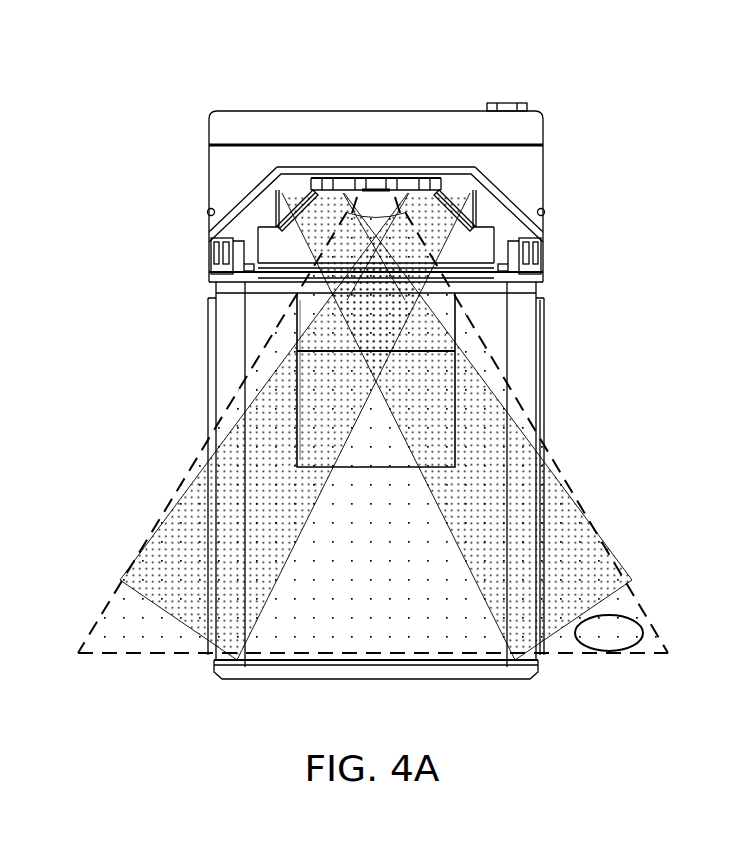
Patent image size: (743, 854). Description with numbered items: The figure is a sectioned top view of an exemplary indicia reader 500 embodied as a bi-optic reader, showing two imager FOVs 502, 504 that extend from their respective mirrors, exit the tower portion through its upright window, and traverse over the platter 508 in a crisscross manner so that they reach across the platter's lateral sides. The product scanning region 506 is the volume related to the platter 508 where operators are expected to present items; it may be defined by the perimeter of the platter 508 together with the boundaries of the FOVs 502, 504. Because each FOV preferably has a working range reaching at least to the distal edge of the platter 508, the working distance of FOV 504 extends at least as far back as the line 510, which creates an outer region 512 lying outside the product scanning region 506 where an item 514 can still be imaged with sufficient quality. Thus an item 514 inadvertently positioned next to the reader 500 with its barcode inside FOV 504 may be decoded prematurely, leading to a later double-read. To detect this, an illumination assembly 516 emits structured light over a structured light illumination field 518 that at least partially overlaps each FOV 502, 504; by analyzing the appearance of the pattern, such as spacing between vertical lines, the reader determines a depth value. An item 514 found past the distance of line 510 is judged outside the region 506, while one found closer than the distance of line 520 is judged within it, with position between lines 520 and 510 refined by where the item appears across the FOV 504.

The indicia reader 500 is at (148, 58).
The imager FOV 502 is at (207, 478).
The imager FOV 504 is at (568, 490).
The product scanning region 506 is at (402, 552).
The platter 508 is at (320, 632).
The line 510 is at (620, 598).
The region 512 is at (584, 552).
The item 514 is at (609, 652).
The illumination assembly 516 is at (370, 180).
The structured light illumination field 518 is at (170, 507).
The line 520 is at (541, 470).